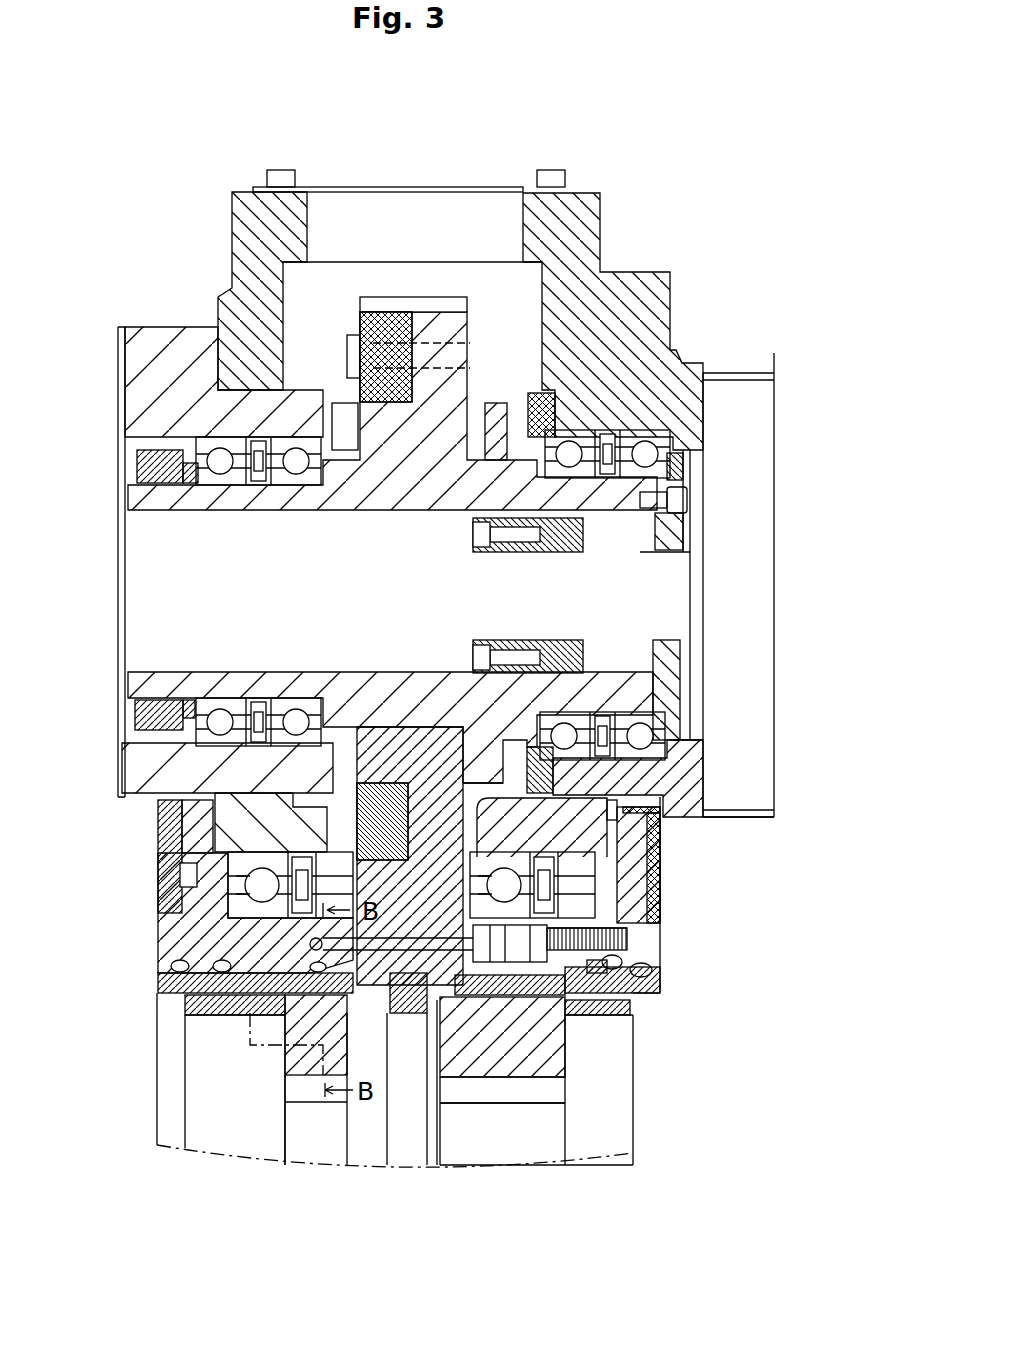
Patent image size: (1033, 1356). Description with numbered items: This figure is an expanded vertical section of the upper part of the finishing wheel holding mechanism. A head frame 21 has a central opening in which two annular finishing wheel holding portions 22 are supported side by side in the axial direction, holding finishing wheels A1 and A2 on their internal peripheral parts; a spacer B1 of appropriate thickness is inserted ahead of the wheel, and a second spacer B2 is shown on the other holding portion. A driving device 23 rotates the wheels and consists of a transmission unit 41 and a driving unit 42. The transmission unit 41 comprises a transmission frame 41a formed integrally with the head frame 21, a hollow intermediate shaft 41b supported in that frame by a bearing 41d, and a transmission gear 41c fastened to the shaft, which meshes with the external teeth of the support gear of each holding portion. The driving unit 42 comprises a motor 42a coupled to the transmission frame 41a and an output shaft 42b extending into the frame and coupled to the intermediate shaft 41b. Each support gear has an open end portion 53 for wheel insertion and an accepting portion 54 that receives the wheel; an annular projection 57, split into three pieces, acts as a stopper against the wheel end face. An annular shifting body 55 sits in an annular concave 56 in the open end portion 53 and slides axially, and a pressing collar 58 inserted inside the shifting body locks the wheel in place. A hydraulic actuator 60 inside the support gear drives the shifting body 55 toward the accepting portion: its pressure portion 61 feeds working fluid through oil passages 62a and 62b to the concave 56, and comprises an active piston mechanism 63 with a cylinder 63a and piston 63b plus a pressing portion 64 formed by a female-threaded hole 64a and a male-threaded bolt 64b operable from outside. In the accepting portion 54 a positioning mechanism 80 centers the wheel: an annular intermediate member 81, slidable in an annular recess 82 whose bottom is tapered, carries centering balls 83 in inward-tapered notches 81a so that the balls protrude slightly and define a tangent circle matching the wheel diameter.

The head frame 21 is at (133, 877).
The finishing wheel holding portion 22 is at (600, 700).
The driving device 23 is at (548, 92).
The transmission unit 41 is at (363, 135).
The transmission frame 41a is at (300, 228).
The intermediate shaft 41b is at (480, 470).
The transmission gear 41c is at (440, 325).
The bearing 41d is at (603, 563).
The driving unit 42 is at (760, 248).
The motor 42a is at (732, 407).
The output shaft 42b is at (670, 355).
The open end portion 53 is at (640, 1172).
The accepting portion 54 is at (555, 1172).
The shifting body 55 is at (633, 992).
The annular concave 56 is at (590, 947).
The annular projection 57 is at (400, 1060).
The pressing collar 58 is at (600, 1017).
The actuator 60 is at (842, 710).
The pressure portion 61 is at (800, 815).
The oil passage 62a is at (300, 945).
The oil passage 62b is at (560, 808).
The active piston mechanism 63 is at (783, 830).
The cylinder 63a is at (600, 822).
The piston 63b is at (560, 890).
The pressing portion 64 is at (727, 880).
The female-threaded hole 64a is at (517, 940).
The male-threaded bolt 64b is at (600, 945).
The positioning mechanism 80 is at (727, 1045).
The intermediate member 81 is at (477, 1000).
The notches 81a is at (503, 1017).
The annular recess 82 is at (507, 1030).
The centering balls 83 is at (477, 1000).
The finishing wheel A1 is at (497, 1147).
The finishing wheel A2 is at (297, 1093).
The spacer B1 is at (427, 1135).
The region B2 is at (350, 1118).